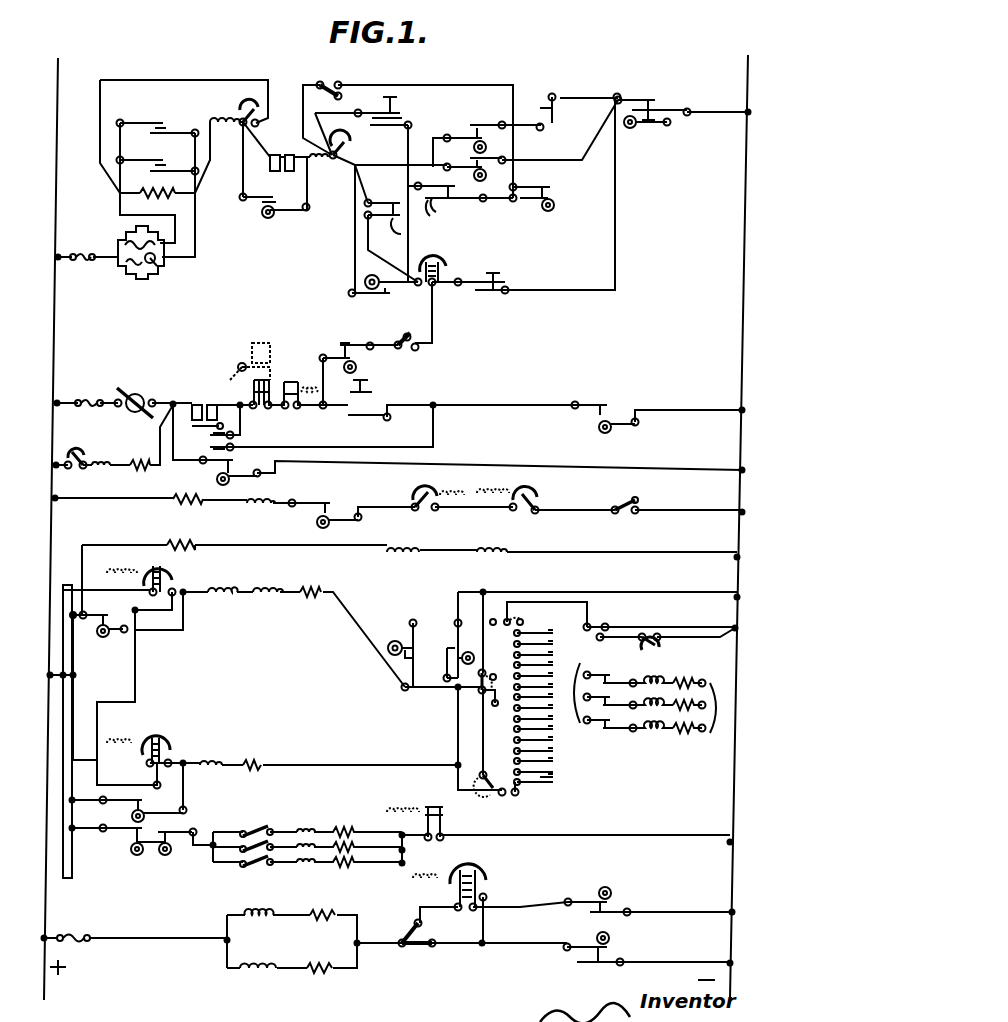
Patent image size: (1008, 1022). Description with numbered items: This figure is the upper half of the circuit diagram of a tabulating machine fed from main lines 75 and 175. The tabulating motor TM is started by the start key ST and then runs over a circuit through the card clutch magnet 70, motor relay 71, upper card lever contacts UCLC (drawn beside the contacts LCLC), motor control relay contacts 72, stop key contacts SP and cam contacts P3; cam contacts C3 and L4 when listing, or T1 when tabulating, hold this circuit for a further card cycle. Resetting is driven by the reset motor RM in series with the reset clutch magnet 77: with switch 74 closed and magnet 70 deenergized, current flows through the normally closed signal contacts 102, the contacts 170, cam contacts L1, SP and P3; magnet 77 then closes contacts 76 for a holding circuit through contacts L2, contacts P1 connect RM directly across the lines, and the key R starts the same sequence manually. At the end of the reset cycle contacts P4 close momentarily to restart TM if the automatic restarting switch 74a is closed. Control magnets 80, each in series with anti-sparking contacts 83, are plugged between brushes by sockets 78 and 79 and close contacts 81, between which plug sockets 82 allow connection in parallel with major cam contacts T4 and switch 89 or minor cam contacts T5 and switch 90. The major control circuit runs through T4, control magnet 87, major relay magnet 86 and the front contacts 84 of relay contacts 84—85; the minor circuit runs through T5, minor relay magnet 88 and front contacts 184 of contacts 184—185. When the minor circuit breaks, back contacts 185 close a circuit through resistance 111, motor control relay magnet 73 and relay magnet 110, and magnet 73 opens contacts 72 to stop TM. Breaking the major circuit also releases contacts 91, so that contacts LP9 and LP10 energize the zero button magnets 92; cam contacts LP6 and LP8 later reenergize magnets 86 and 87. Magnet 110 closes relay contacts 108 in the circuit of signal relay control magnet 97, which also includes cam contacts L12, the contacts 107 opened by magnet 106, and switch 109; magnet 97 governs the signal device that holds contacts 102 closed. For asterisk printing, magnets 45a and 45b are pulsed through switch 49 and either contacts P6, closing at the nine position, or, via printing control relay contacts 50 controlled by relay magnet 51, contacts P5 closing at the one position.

The tabulating motor TM is at (118, 246).
The automatic restarting switch 74a is at (333, 88).
The card clutch magnet 70 is at (320, 392).
The motor relay 71 is at (318, 162).
The start key ST is at (392, 116).
The cam controlled contacts L4 is at (485, 120).
The cam controlled contacts T1 is at (493, 162).
The normally open contacts P4 is at (556, 193).
The cam contacts P3 is at (655, 108).
The lower contact LCLC is at (445, 212).
The upper card lever contacts UCLC is at (403, 226).
The motor control relay magnet 73 is at (448, 250).
The motor control relay contacts 72 is at (443, 270).
The cam controlled contacts C3 is at (385, 292).
The stop key contacts SP is at (505, 278).
The main line 175 is at (745, 310).
The switch 74 is at (405, 350).
The cam contacts L1 is at (347, 367).
The reset key contacts R is at (370, 396).
The main line 75 is at (57, 378).
The reset motor RM is at (138, 395).
The reset clutch magnet 77 is at (210, 399).
The signal contacts 102 is at (262, 410).
The signal relay control magnet 97 is at (271, 343).
The contacts 170 is at (292, 382).
The contacts 76 is at (210, 441).
The contacts L2 is at (605, 411).
The contacts P1 is at (230, 477).
The cam contacts L12 is at (326, 518).
The relay contacts 108 is at (440, 510).
The relay magnet 110 is at (457, 490).
The magnet 106 is at (493, 490).
The contacts 107 is at (540, 498).
The switch 109 is at (635, 500).
The resistance 111 is at (185, 538).
The major relay magnet 86 is at (133, 566).
The major relay contacts 85 is at (165, 584).
The control magnet 87 is at (268, 588).
The front contacts of major relay 84 is at (145, 595).
The cam contacts LP6 is at (106, 637).
The major cam contacts T4 is at (410, 640).
The minor cam contacts T5 is at (450, 640).
The switch 89 is at (478, 688).
The plug sockets 82 is at (540, 758).
The contacts 81 is at (550, 778).
The switch 90 is at (483, 795).
The plug sockets 78 is at (599, 678).
The control magnets 80 is at (642, 725).
The plug sockets 79 is at (700, 694).
The contacts 83 is at (610, 732).
The minor relay magnet 88 is at (133, 735).
The front contacts of minor relay 184 is at (143, 742).
The back contacts of minor relay 185 is at (186, 774).
The cam contacts LP8 is at (150, 805).
The contacts LP9 is at (130, 850).
The contacts LP10 is at (174, 852).
The zero button magnets 92 is at (316, 865).
The contacts 91 is at (433, 814).
The printing control relay contacts 50 is at (470, 872).
The printing control relay magnet 51 is at (413, 880).
The switch 49 is at (417, 951).
The asterisk bar magnet 45a is at (268, 913).
The asterisk bar magnet 45b is at (262, 966).
The contacts P5 is at (615, 902).
The contacts P6 is at (605, 955).